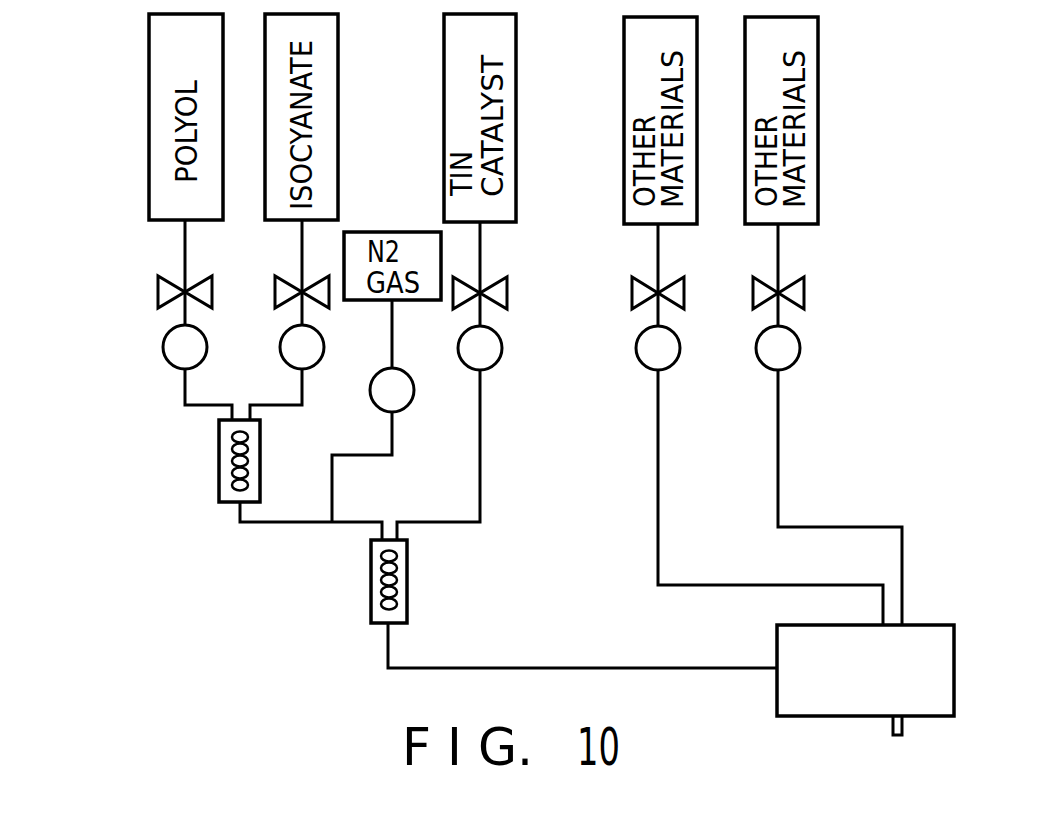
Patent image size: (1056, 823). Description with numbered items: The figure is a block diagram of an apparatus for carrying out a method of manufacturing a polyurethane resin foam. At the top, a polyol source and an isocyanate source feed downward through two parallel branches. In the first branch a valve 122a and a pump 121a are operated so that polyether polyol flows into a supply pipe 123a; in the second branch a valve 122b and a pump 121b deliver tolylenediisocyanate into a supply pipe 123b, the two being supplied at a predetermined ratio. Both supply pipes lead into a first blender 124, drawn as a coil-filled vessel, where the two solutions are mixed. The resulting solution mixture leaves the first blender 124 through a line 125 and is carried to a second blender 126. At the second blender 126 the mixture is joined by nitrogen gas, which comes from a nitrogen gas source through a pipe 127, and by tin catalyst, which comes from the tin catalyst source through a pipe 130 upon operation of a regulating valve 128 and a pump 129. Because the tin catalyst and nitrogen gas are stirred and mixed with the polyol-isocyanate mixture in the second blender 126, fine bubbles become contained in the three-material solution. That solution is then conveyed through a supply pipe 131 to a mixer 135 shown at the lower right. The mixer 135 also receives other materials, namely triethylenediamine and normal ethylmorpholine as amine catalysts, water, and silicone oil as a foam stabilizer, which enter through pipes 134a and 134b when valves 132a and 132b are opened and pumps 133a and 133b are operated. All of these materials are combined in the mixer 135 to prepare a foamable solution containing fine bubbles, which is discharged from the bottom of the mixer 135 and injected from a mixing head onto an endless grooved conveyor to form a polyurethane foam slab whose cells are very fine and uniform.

The pump 121a is at (168, 362).
The pump 121b is at (280, 350).
The valve 122a is at (158, 288).
The valve 122b is at (276, 285).
The supply pipe 123a is at (183, 405).
The supply pipe 123b is at (305, 405).
The first blender 124 is at (220, 485).
The mixture line 125 is at (275, 523).
The second blender 126 is at (407, 600).
The pipe 127 is at (332, 488).
The regulating valve 128 is at (507, 290).
The pump 129 is at (502, 350).
The pipe 130 is at (482, 468).
The supply pipe 131 is at (637, 668).
The valve 132a is at (684, 285).
The valve 132b is at (804, 288).
The pump 133a is at (640, 365).
The pump 133b is at (800, 355).
The pipe 134a is at (660, 500).
The pipe 134b is at (780, 453).
The mixer 135 is at (955, 640).